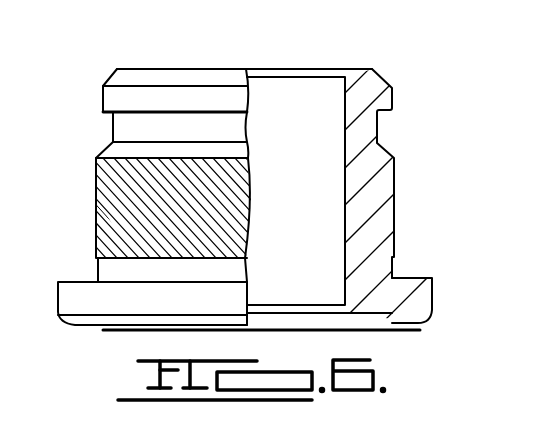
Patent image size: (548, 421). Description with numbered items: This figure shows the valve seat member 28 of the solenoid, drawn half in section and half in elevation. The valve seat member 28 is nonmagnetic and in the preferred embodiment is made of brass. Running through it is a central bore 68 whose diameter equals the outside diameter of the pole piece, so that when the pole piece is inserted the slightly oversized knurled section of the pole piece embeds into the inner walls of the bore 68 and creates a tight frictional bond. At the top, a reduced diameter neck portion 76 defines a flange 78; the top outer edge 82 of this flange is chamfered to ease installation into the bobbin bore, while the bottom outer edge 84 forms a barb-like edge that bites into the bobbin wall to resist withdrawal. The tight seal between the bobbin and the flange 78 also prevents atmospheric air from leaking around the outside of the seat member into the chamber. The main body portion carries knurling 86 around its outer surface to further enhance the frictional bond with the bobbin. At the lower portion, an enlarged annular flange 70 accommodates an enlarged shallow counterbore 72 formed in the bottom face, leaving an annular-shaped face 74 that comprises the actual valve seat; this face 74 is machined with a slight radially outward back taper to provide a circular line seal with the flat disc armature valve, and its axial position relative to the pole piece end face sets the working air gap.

The flange 78 is at (112, 98).
The reduced diameter neck portion 76 is at (120, 129).
The knurling 86 is at (128, 195).
The enlarged annular flange 70 is at (76, 290).
The enlarged shallow counterbore 72 is at (390, 325).
The central bore 68 is at (345, 170).
The valve seat member 28 is at (405, 210).
The top outer edge 82 is at (380, 70).
The bottom outer edge 84 is at (395, 114).
The bottom annular surface 74 is at (418, 326).